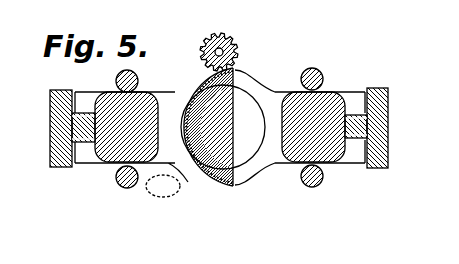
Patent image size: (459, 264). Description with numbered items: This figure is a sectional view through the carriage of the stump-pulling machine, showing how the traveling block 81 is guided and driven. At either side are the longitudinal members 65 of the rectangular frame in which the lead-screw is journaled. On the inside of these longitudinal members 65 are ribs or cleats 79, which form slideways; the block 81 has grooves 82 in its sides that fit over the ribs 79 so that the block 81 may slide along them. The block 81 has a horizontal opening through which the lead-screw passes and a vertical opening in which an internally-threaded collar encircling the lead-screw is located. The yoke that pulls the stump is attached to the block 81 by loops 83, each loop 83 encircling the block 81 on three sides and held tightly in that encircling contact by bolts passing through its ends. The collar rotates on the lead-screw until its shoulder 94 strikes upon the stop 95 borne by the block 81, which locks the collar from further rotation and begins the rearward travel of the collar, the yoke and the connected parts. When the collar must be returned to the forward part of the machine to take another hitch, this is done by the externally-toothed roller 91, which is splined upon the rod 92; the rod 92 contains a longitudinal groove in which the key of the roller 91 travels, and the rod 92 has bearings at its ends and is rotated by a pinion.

The longitudinal members 65 is at (55, 126).
The ribs or cleats 79 is at (85, 118).
The block 81 is at (220, 127).
The grooves 82 is at (93, 140).
The loops 83 is at (302, 185).
The externally-toothed roller 91 is at (222, 41).
The rod 92 is at (238, 53).
The shoulder 94 is at (163, 186).
The stop 95 is at (257, 92).